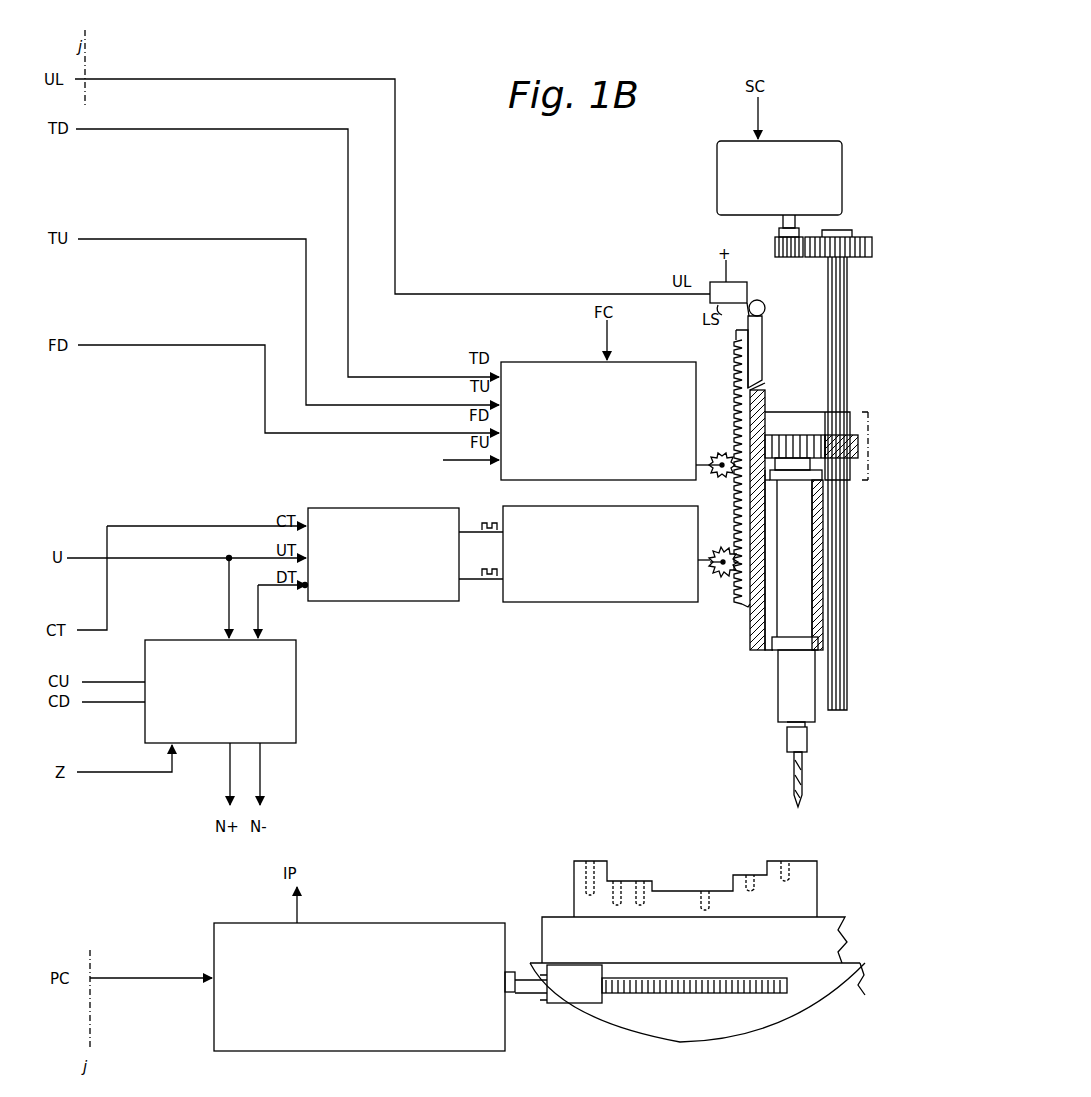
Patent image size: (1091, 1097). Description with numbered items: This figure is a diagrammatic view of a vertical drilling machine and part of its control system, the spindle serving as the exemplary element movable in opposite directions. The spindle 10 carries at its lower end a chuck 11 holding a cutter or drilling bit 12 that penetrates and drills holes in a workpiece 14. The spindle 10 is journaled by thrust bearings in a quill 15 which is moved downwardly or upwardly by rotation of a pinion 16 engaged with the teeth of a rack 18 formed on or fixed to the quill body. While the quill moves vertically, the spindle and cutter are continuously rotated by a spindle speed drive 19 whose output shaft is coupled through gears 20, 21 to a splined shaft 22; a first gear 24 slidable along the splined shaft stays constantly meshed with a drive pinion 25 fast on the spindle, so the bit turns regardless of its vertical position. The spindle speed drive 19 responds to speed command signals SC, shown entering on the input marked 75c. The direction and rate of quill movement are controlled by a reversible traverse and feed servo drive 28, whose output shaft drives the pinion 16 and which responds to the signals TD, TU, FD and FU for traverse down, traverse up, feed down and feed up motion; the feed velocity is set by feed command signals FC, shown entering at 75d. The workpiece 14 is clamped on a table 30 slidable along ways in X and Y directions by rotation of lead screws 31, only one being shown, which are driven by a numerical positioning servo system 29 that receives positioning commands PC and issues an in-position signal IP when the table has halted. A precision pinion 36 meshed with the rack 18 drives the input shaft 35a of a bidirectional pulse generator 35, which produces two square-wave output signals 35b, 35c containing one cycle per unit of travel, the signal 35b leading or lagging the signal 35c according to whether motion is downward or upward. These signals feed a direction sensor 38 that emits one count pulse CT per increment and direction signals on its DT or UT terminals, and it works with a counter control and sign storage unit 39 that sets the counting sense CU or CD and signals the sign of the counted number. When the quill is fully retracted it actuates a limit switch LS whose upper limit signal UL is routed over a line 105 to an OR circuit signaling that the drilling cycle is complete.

The spindle 10 is at (783, 678).
The chuck 11 is at (790, 738).
The cutter or drilling bit 12 is at (794, 795).
The workpiece 14 is at (773, 868).
The quill 15 is at (756, 630).
The pinion 16 is at (721, 454).
The rack 18 is at (735, 366).
The spindle speed drive 19 is at (801, 142).
The gear 20 is at (793, 258).
The gear 21 is at (864, 237).
The splined shaft 22 is at (828, 345).
The first gear 24 is at (857, 435).
The drive pinion 25 is at (786, 435).
The reversible traverse and feed servo drive 28 is at (536, 362).
The numerical positioning servo system 29 is at (469, 930).
The table 30 is at (565, 923).
The lead screws 31 is at (692, 996).
The bidirectional pulse generator 35 is at (627, 596).
The input shaft 35a is at (685, 555).
The output signal 35b is at (489, 523).
The output signal 35c is at (482, 577).
The precision pinion 36 is at (722, 577).
The direction sensor 38 is at (389, 512).
The counter control and sign storage unit 39 is at (296, 686).
The spindle speed control line 75c is at (757, 117).
The feed control line 75d is at (608, 340).
The line 105 is at (395, 196).